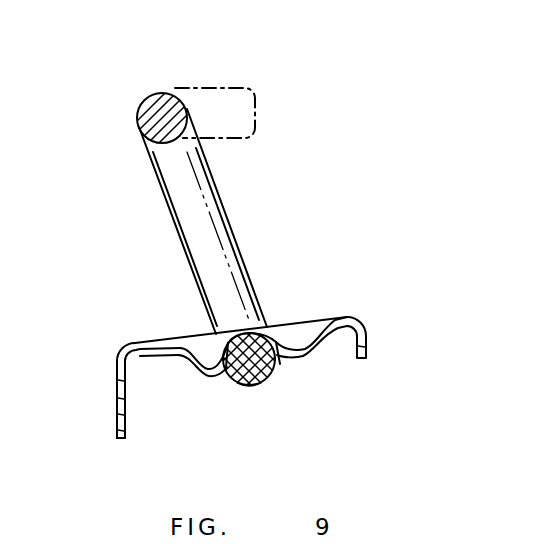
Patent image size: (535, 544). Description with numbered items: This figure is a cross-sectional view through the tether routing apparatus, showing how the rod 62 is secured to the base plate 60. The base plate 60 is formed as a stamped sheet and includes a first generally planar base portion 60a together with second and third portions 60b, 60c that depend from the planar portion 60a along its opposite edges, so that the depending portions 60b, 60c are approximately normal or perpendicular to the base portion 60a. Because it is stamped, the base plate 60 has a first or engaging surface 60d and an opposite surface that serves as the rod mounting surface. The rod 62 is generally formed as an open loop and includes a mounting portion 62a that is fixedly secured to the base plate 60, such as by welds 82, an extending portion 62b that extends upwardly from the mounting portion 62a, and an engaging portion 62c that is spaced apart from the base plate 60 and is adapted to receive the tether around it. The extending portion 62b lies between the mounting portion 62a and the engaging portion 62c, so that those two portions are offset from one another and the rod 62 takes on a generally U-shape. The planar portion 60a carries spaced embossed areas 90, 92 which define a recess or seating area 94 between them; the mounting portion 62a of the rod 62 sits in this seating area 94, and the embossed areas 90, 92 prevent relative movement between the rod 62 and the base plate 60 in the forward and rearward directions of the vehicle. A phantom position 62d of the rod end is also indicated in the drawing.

The base plate 60 is at (360, 313).
The first generally planar base portion 60a is at (148, 343).
The second portion 60b is at (117, 397).
The third portion 60c is at (367, 340).
The first or engaging surface 60d is at (180, 336).
The rod 62 is at (204, 241).
The mounting portion 62a is at (240, 383).
The extending portion 62b is at (178, 214).
The engaging portion 62c is at (153, 107).
The phantom position of rod end 62d is at (233, 83).
The welds 82 is at (220, 368).
The embossed area 90 is at (196, 367).
The embossed area 92 is at (301, 357).
The seating area 94 is at (255, 384).